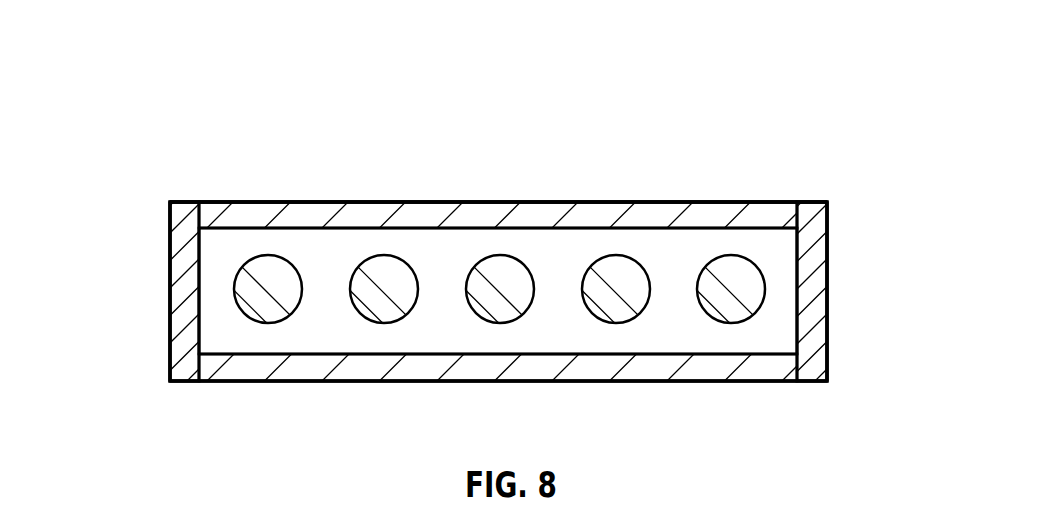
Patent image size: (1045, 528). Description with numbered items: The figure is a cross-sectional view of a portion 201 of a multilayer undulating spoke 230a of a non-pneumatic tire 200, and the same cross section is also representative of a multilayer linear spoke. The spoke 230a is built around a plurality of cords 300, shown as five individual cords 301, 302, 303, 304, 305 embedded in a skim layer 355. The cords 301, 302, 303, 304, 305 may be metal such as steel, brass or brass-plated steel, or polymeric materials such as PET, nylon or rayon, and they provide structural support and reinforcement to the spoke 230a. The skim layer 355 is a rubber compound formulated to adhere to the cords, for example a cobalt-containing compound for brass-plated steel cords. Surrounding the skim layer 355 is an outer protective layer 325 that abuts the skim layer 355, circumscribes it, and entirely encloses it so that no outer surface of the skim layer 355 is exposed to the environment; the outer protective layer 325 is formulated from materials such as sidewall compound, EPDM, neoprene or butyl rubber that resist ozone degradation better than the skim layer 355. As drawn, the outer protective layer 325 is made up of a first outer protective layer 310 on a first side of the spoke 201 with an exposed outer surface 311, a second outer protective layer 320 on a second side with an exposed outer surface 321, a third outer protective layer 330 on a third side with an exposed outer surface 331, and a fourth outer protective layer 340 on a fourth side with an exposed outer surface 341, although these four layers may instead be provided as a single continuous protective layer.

The non-pneumatic tire 200 is at (152, 117).
The portion of multilayer undulating spoke 201 is at (848, 313).
The multilayer undulating spoke 230a is at (147, 160).
The plurality of cords 300 is at (222, 322).
The cord 301 is at (273, 278).
The cord 302 is at (387, 278).
The cord 303 is at (500, 277).
The cord 304 is at (610, 273).
The cord 305 is at (718, 273).
The first outer protective layer 310 is at (258, 208).
The outer surface 311 is at (270, 200).
The second outer protective layer 320 is at (243, 367).
The outer surface 321 is at (252, 383).
The outer protective layer 325 is at (413, 132).
The third outer protective layer 330 is at (183, 315).
The outer surface 331 is at (168, 257).
The fourth outer protective layer 340 is at (817, 298).
The outer surface 341 is at (827, 263).
The skim layer 355 is at (216, 254).